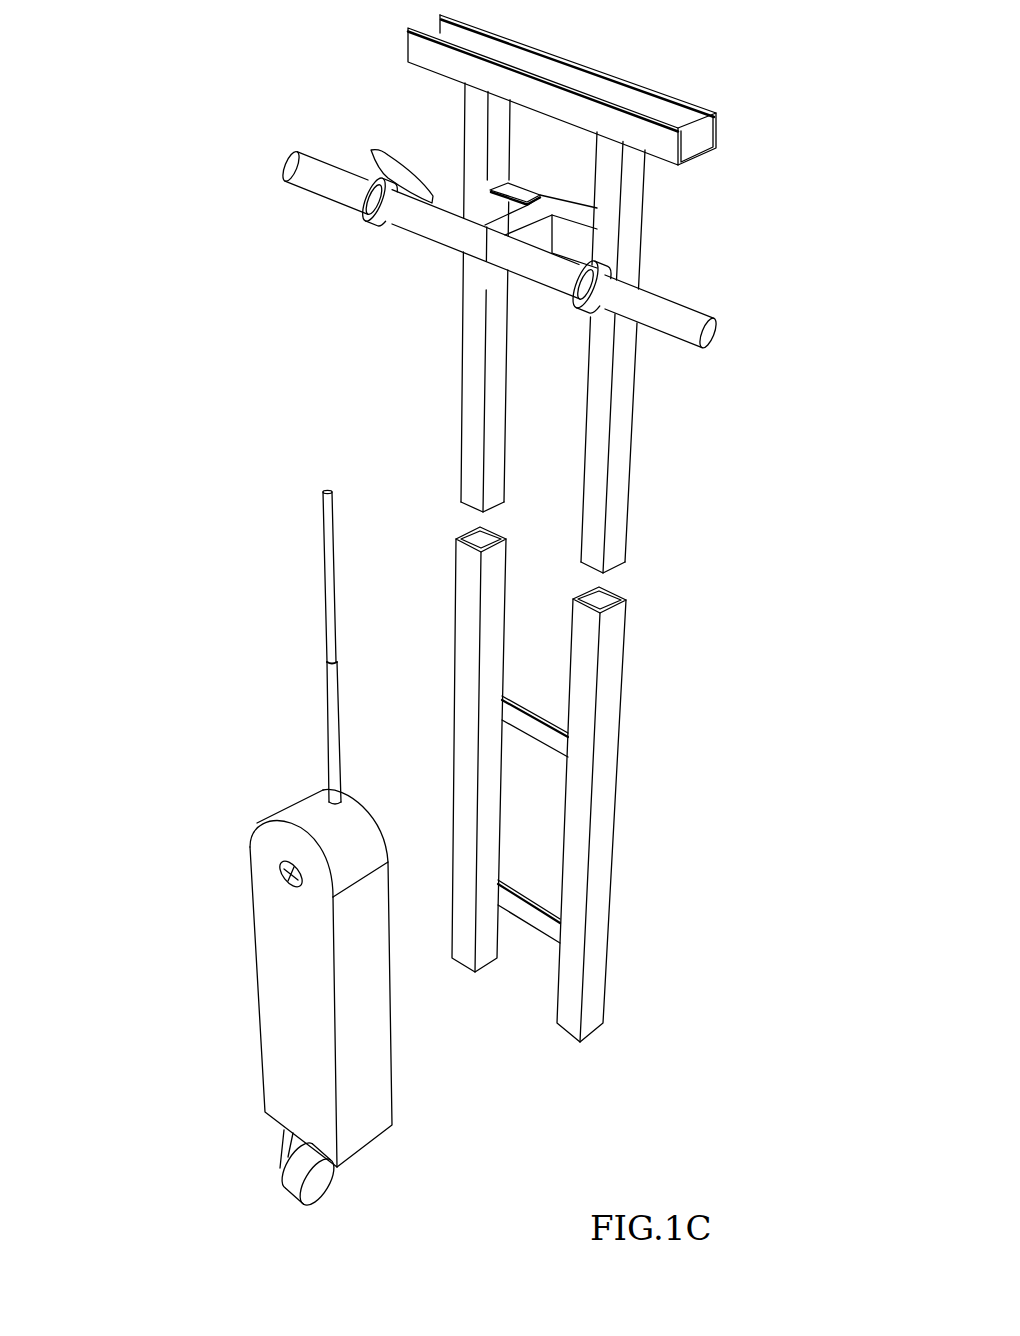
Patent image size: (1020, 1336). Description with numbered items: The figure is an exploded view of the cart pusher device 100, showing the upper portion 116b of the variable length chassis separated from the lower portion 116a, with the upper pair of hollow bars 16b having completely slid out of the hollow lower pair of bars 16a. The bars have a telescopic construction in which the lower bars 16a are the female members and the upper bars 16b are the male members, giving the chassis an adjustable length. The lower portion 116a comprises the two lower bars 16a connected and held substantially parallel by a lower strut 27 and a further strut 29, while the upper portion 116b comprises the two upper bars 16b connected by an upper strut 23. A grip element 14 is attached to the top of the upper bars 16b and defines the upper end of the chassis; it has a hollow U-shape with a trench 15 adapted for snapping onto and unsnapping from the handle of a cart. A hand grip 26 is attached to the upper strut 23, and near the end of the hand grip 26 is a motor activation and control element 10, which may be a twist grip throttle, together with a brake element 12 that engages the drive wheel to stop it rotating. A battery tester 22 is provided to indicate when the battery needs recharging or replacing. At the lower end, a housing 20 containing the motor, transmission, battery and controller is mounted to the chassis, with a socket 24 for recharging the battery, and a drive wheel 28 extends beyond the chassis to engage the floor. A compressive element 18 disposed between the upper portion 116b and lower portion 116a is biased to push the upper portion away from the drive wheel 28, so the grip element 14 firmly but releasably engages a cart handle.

The device 100 is at (203, 76).
The motor activation and control element 10 is at (692, 305).
The brake element 12 is at (365, 158).
The grip element 14 is at (637, 82).
The trench 15 is at (700, 127).
The lower pair of hollow bars 16a is at (460, 590).
The upper pair of hollow bars 16b is at (477, 125).
The compressive element 18 is at (328, 697).
The housing 20 is at (270, 1025).
The battery tester 22 is at (517, 192).
The upper strut 23 is at (577, 238).
The socket 24 is at (283, 883).
The hand grip 26 is at (437, 243).
The lower strut 27 is at (533, 912).
The drive wheel 28 is at (320, 1183).
The strut 29 is at (515, 720).
The lower portion of the chassis 116a is at (657, 877).
The upper portion of the chassis 116b is at (412, 363).